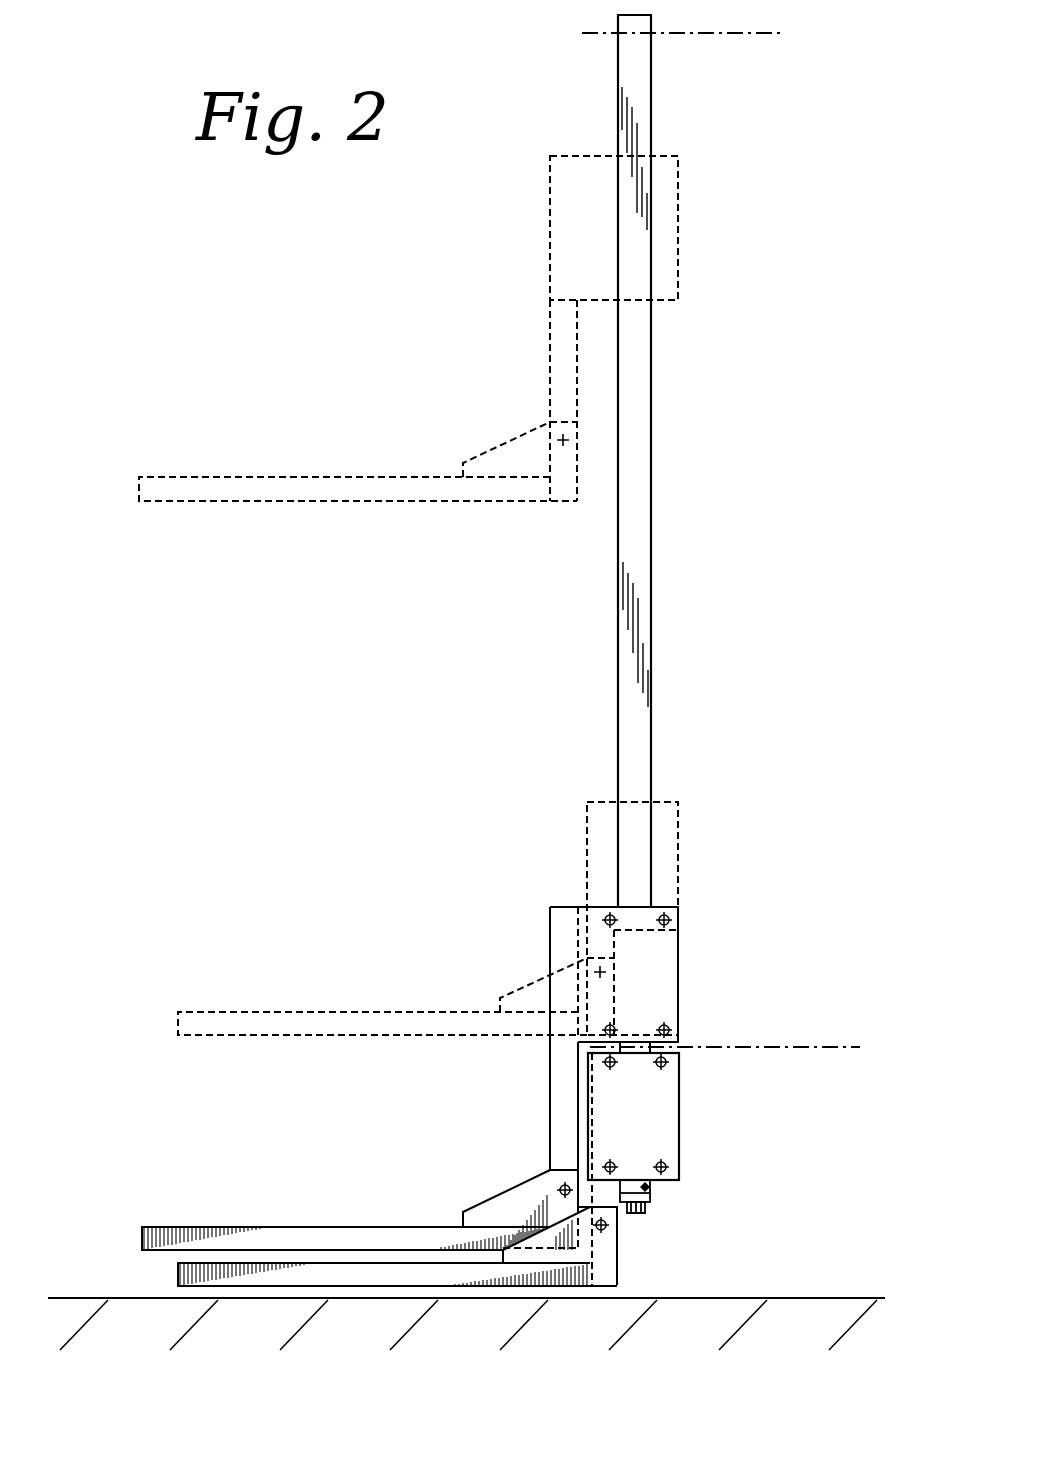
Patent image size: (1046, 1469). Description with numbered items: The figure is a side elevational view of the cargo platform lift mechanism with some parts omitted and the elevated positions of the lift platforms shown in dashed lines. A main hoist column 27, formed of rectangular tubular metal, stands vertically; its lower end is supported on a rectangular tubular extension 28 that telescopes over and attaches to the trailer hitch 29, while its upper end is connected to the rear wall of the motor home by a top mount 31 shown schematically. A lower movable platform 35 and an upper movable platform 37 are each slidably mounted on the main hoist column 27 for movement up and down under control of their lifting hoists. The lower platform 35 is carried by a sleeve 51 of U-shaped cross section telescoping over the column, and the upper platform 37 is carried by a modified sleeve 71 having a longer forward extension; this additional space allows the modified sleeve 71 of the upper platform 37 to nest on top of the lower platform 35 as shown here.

The main hoist column 27 is at (640, 722).
The rectangular tubular extension 28 is at (640, 1200).
The trailer hitch 29 is at (808, 1046).
The top mount 31 is at (723, 35).
The lower movable platform 35 is at (330, 1010).
The upper movable platform 37 is at (200, 477).
The sleeve 51 is at (672, 830).
The modified sleeve 71 is at (550, 210).